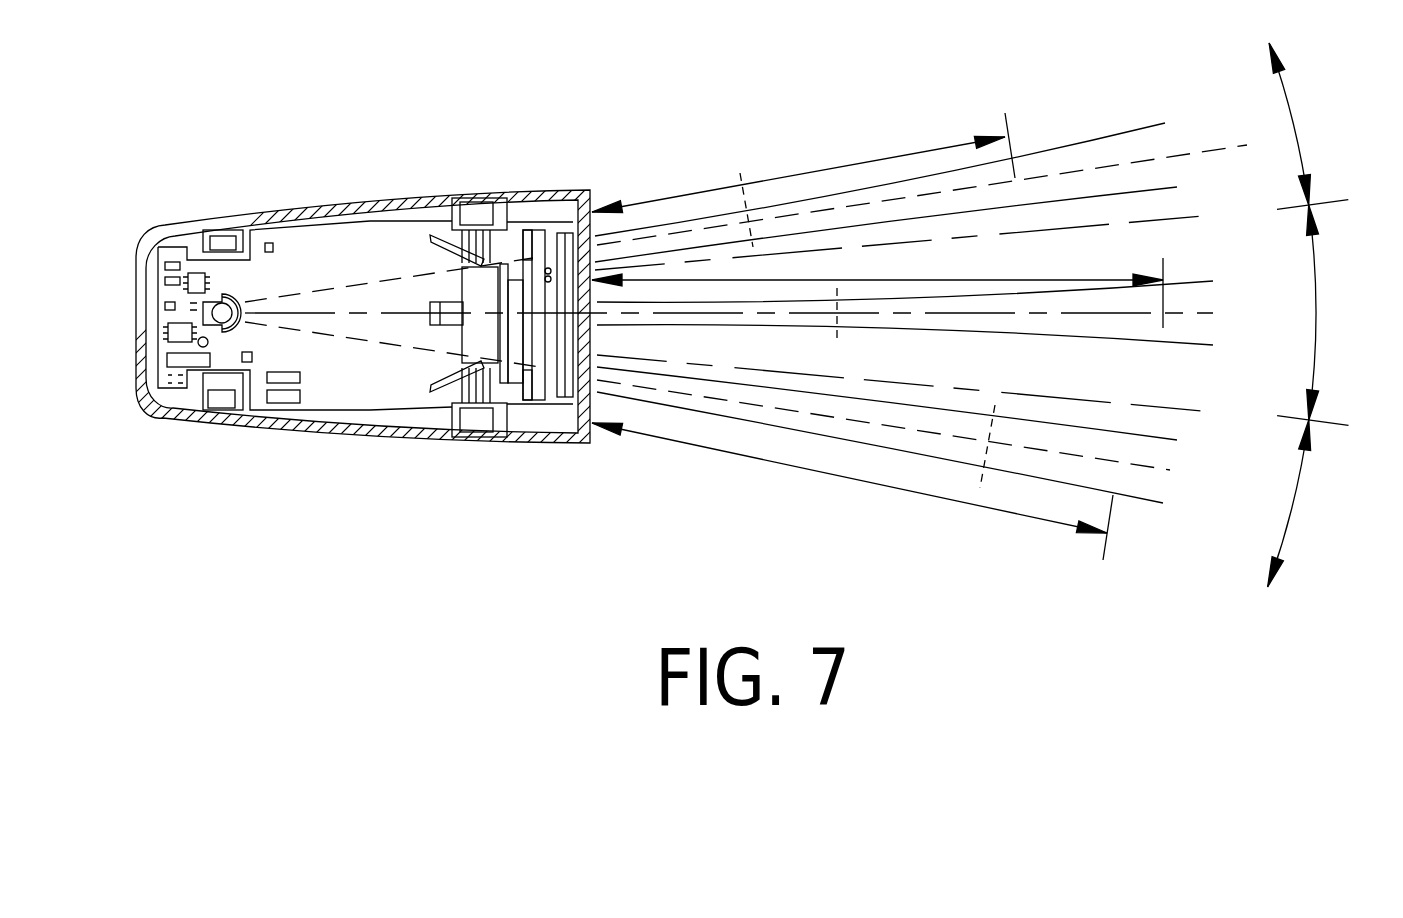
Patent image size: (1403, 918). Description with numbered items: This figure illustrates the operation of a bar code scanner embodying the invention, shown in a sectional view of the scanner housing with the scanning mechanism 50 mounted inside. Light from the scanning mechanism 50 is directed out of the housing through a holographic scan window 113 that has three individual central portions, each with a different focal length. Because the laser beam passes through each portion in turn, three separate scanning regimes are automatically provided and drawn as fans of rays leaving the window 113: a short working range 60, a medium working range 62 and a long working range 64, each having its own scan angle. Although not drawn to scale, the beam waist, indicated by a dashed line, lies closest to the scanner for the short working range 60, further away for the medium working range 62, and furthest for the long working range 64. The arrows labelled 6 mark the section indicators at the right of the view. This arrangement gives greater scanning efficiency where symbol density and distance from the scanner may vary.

The section line indicators for FIG. 6 is at (1295, 119).
The taut band element scanning mechanism 50 is at (242, 296).
The short working range 60 is at (818, 170).
The medium working range 62 is at (1015, 280).
The long working range 64 is at (837, 475).
The holographic scan window 113 is at (593, 402).